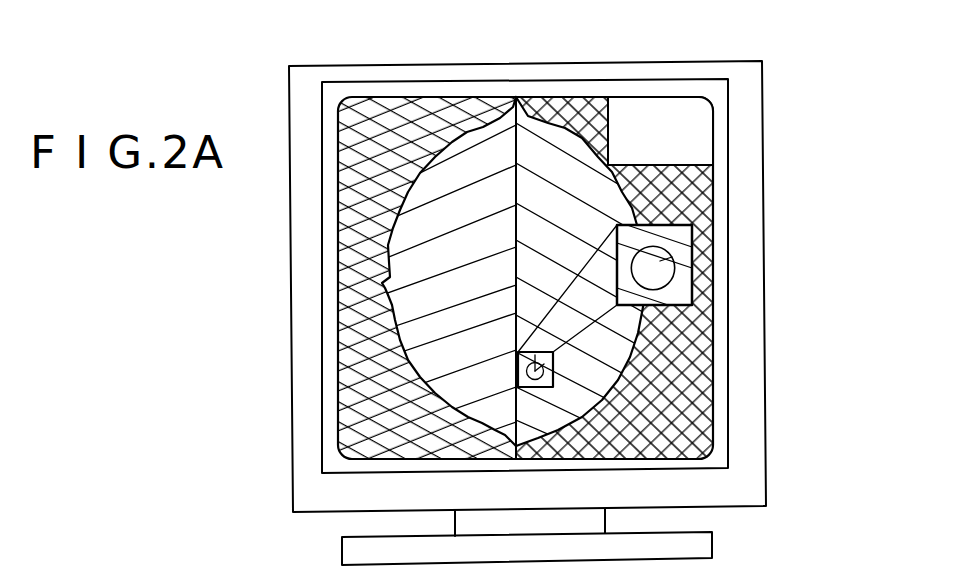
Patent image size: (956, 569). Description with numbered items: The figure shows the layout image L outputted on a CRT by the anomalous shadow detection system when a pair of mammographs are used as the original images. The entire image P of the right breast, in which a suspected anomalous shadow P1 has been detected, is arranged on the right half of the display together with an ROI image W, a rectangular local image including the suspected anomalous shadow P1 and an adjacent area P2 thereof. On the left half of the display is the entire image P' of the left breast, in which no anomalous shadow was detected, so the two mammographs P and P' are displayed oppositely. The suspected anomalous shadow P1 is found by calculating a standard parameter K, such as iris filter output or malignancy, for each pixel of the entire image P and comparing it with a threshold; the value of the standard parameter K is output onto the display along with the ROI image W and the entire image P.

The entire image of the left breast P' is at (427, 238).
The layout image L is at (528, 84).
The entire image P is at (614, 238).
The standard parameter K is at (690, 105).
The ROI image W is at (695, 226).
The suspected anomalous shadow P1 is at (695, 242).
The adjacent area P2 is at (698, 286).